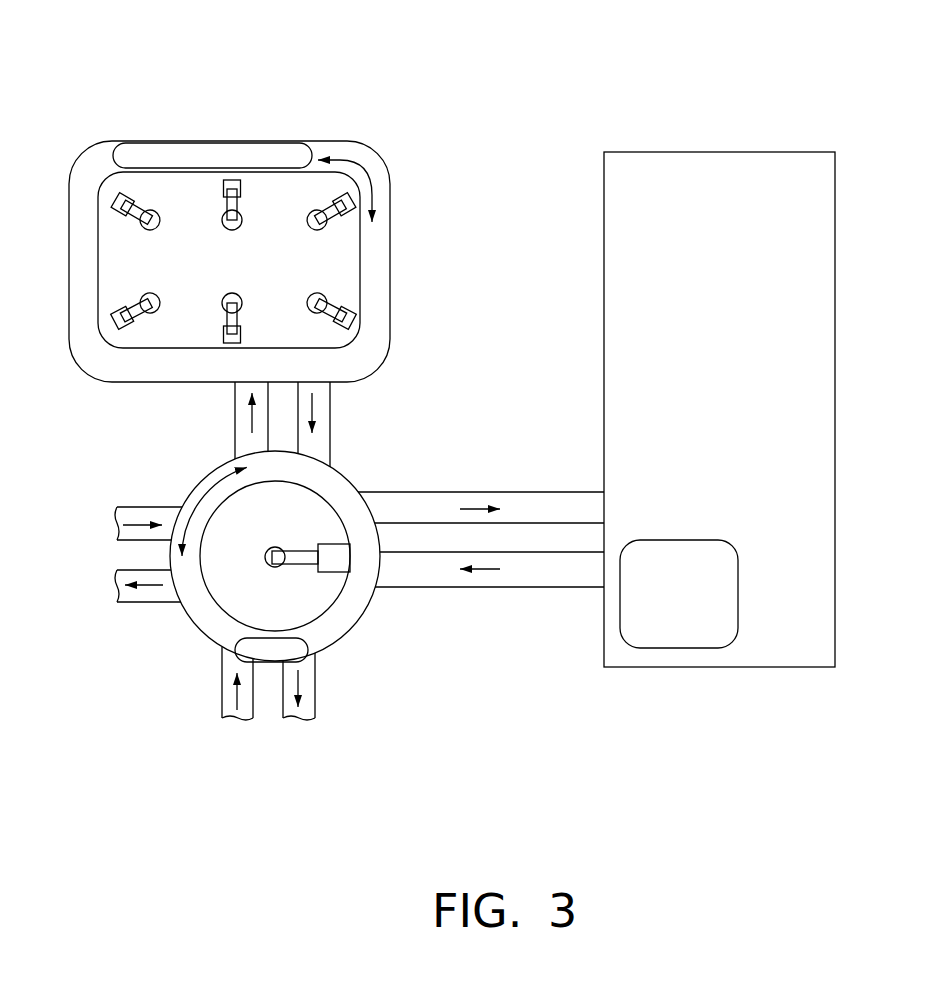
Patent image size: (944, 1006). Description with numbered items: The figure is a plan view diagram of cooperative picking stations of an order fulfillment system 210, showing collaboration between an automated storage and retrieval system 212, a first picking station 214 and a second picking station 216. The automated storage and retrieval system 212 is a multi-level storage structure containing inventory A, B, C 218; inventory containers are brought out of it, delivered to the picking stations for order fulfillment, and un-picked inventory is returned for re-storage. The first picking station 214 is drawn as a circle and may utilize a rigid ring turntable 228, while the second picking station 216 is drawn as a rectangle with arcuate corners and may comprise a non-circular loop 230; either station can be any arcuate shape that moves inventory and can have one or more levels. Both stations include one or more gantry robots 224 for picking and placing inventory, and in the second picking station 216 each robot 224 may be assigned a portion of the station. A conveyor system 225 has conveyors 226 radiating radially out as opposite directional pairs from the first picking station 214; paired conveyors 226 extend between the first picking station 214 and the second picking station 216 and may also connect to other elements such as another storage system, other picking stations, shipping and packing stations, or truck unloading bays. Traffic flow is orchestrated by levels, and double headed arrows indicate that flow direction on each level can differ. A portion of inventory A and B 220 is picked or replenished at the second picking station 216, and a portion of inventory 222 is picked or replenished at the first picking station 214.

The order fulfillment system 210 is at (632, 90).
The automated storage and retrieval system 212 is at (728, 152).
The first picking station 214 is at (365, 665).
The second picking station 216 is at (385, 132).
The inventory A, B, C 218 is at (673, 650).
The inventory A and B 220 is at (115, 150).
The portion of inventory 222 is at (217, 643).
The gantry robot 224 is at (112, 212).
The conveyor system 225 is at (393, 383).
The conveyors 226 is at (233, 398).
The rigid ring turntable 228 is at (363, 628).
The non-circular loop 230 is at (87, 158).